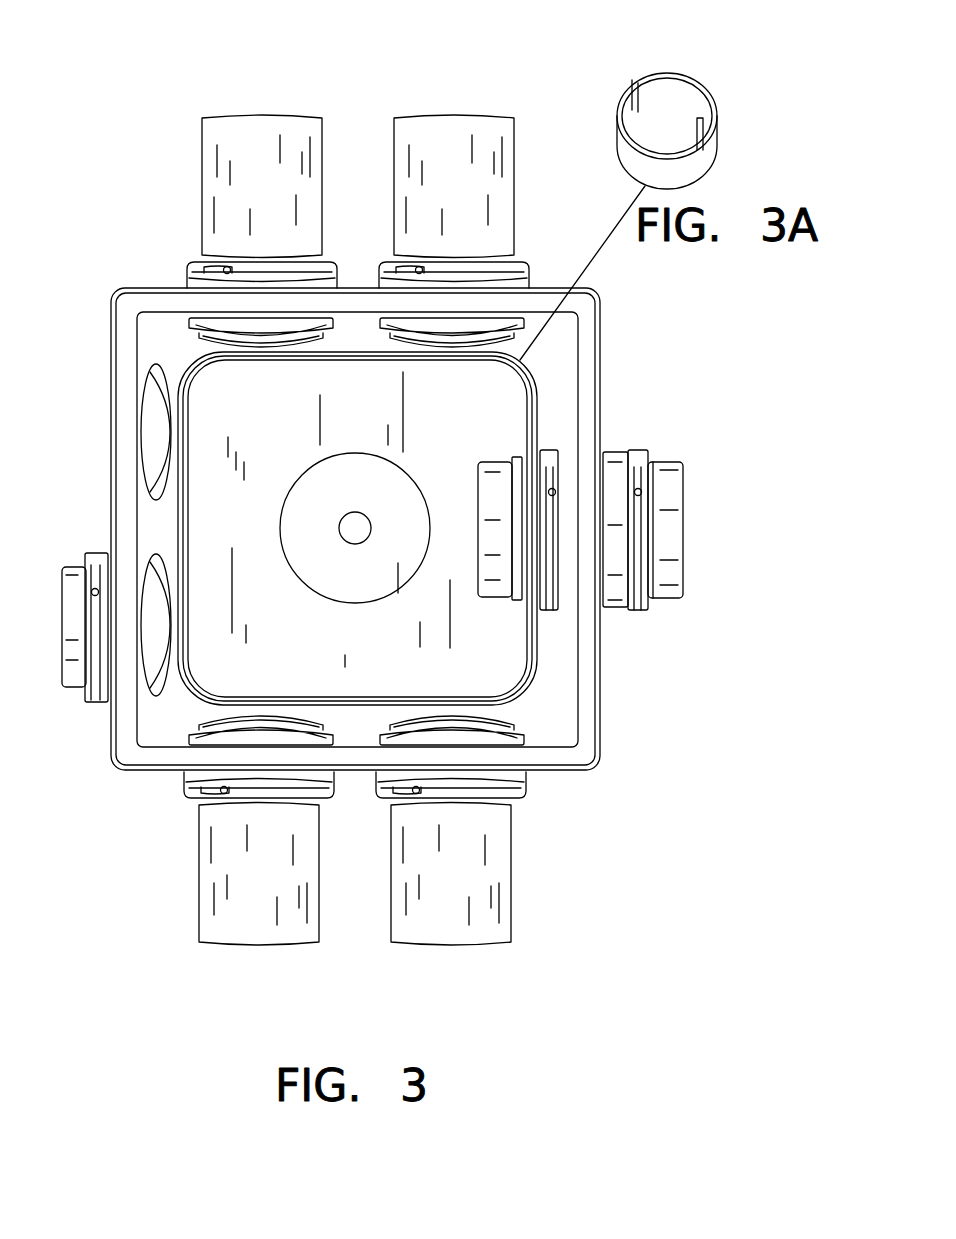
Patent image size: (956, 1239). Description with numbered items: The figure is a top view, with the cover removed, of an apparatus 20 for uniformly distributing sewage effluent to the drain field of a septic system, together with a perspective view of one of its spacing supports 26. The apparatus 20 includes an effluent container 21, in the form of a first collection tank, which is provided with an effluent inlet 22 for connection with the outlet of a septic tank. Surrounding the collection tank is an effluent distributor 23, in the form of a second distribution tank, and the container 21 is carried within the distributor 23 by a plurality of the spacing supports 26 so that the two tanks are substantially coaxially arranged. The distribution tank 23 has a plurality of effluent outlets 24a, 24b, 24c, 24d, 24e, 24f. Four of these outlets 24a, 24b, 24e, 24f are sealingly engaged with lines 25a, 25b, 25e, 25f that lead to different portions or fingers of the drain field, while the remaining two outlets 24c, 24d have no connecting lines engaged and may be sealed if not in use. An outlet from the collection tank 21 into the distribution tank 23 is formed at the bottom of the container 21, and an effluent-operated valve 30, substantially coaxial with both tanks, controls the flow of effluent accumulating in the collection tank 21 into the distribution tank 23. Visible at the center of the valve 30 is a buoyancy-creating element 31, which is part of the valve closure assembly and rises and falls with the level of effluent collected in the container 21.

In FIG. 3, the apparatus 20 is at (578, 104).
In FIG. 3, the effluent container 21 is at (200, 366).
In FIG. 3, the effluent inlet 22 is at (620, 450).
In FIG. 3, the effluent distributor 23 is at (112, 375).
In FIG. 3, the effluent outlet 24a is at (500, 805).
In FIG. 3, the effluent outlet 24b is at (222, 793).
In FIG. 3, the effluent outlet 24c is at (86, 560).
In FIG. 3, the effluent outlet 24d is at (108, 469).
In FIG. 3, the effluent outlet 24e is at (193, 263).
In FIG. 3, the effluent outlet 24f is at (520, 262).
In FIG. 3, the line 25a is at (513, 907).
In FIG. 3, the line 25b is at (197, 905).
In FIG. 3, the line 25e is at (218, 168).
In FIG. 3, the line 25f is at (496, 178).
In FIG. 3A, the spacing support 26 is at (672, 75).
In FIG. 3, the effluent-operated valve 30 is at (422, 469).
In FIG. 3, the buoyancy-creating element 31 is at (330, 488).